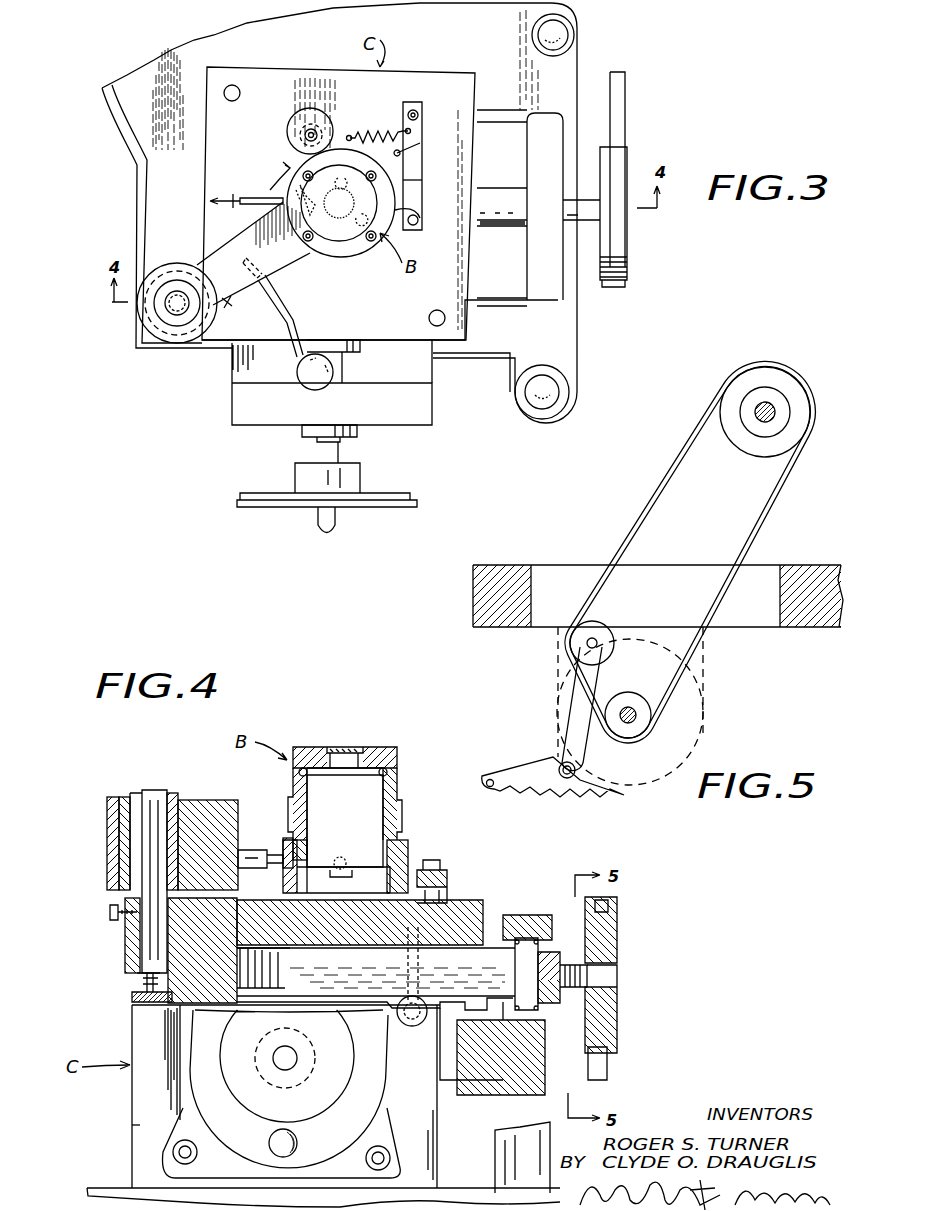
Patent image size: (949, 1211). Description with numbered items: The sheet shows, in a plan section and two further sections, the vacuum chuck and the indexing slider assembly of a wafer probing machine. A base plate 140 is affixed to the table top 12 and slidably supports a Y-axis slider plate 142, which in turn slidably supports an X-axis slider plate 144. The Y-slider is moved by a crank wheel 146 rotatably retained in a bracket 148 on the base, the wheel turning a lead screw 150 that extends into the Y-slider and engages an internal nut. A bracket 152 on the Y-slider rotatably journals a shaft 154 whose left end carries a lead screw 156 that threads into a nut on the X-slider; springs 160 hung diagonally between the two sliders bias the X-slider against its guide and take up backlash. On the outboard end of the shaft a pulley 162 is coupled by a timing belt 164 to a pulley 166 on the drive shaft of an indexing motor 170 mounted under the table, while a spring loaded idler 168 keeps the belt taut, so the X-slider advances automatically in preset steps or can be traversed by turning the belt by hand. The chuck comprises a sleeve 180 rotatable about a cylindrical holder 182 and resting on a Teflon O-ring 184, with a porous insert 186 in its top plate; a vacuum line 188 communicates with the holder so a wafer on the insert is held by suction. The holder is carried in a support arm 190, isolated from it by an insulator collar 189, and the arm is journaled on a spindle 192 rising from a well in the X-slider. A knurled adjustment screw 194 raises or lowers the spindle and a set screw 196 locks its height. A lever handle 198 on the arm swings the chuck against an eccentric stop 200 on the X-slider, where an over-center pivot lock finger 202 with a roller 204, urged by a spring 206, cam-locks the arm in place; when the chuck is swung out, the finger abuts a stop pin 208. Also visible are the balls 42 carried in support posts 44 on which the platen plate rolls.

In FIG. 5, the table top 12 is at (507, 565).
In FIG. 4, the table top 12 is at (102, 1188).
In FIG. 3, the balls 42 is at (563, 33).
In FIG. 3, the support posts 44 is at (580, 48).
In FIG. 4, the base plate 140 is at (137, 1123).
In FIG. 4, the Y-axis slider plate 142 is at (143, 1030).
In FIG. 3, the X-axis slider plate 144 is at (467, 66).
In FIG. 4, the X-axis slider plate 144 is at (470, 903).
In FIG. 3, the crank wheel 146 is at (355, 510).
In FIG. 4, the crank wheel 146 is at (305, 1104).
In FIG. 3, the bracket 148 is at (233, 407).
In FIG. 4, the bracket 148 is at (192, 1118).
In FIG. 3, the lead screw 150 is at (353, 345).
In FIG. 3, the bracket 152 is at (558, 300).
In FIG. 4, the bracket 152 is at (557, 907).
In FIG. 3, the shaft 154 is at (497, 197).
In FIG. 4, the shaft 154 is at (499, 972).
In FIG. 4, the lead screw 156 is at (257, 950).
In FIG. 4, the springs 160 is at (407, 1023).
In FIG. 3, the pulley 162 is at (627, 240).
In FIG. 5, the pulley 162 is at (789, 380).
In FIG. 4, the pulley 162 is at (615, 940).
In FIG. 3, the timing belt 164 is at (622, 85).
In FIG. 5, the timing belt 164 is at (662, 481).
In FIG. 4, the timing belt 164 is at (597, 1062).
In FIG. 5, the pulley 166 is at (643, 722).
In FIG. 5, the spring loaded idler 168 is at (576, 675).
In FIG. 5, the indexing motor 170 is at (695, 700).
In FIG. 4, the sleeve 180 is at (400, 788).
In FIG. 4, the cylindrical holder 182 is at (382, 810).
In FIG. 4, the Teflon O-ring 184 is at (377, 772).
In FIG. 3, the porous insert 186 is at (345, 218).
In FIG. 4, the porous insert 186 is at (368, 722).
In FIG. 3, the vacuum line 188 is at (260, 197).
In FIG. 4, the vacuum line 188 is at (260, 850).
In FIG. 4, the insulator collar 189 is at (400, 843).
In FIG. 3, the support arm 190 is at (278, 255).
In FIG. 4, the support arm 190 is at (203, 800).
In FIG. 3, the spindle 192 is at (175, 295).
In FIG. 4, the spindle 192 is at (150, 833).
In FIG. 4, the knurled adjustment screw 194 is at (132, 997).
In FIG. 4, the set screw 196 is at (110, 913).
In FIG. 3, the lever handle 198 is at (293, 334).
In FIG. 3, the eccentric stop 200 is at (297, 128).
In FIG. 3, the over-center pivot lock finger 202 is at (417, 185).
In FIG. 4, the over-center pivot lock finger 202 is at (440, 878).
In FIG. 3, the roller 204 is at (408, 233).
In FIG. 3, the spring 206 is at (379, 124).
In FIG. 3, the stop pin 208 is at (418, 142).